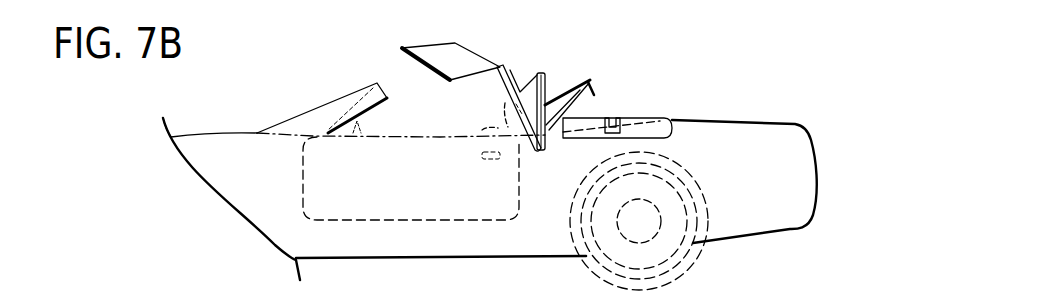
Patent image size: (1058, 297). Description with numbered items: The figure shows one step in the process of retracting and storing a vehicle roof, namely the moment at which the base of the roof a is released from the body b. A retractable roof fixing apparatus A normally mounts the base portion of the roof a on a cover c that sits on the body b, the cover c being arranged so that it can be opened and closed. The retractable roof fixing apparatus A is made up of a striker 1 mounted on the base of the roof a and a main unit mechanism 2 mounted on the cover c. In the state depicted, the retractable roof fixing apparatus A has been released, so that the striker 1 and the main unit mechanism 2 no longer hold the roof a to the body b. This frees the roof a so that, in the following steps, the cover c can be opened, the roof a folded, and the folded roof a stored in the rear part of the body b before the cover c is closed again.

The roof a is at (540, 70).
The retractable roof fixing apparatus A is at (594, 66).
The striker 1 is at (594, 93).
The main unit mechanism 2 is at (621, 125).
The cover c is at (660, 123).
The body b is at (783, 138).